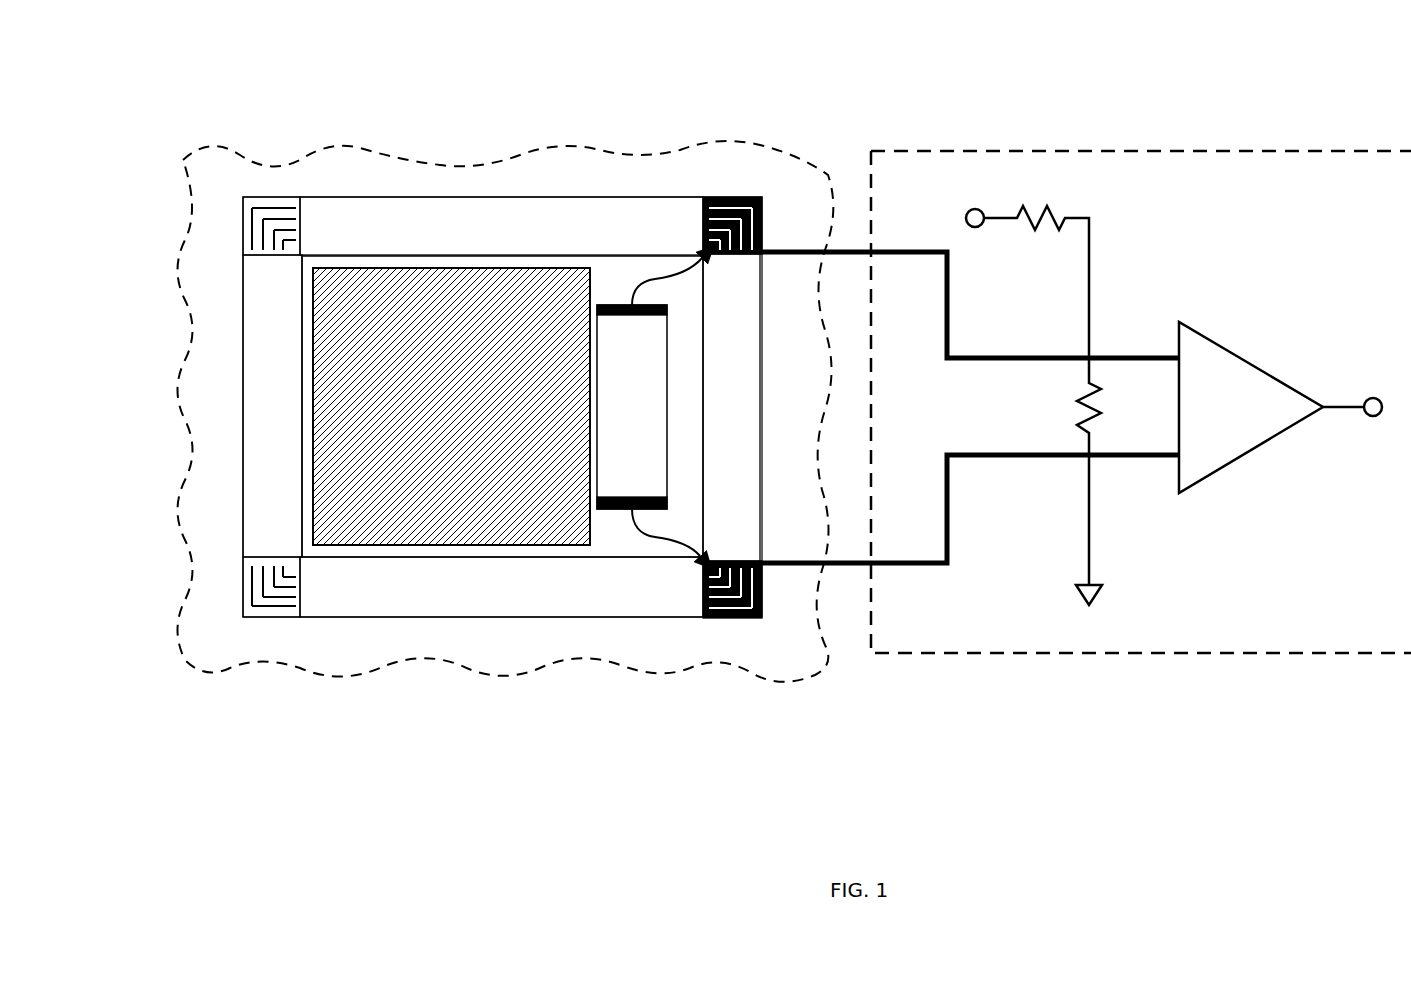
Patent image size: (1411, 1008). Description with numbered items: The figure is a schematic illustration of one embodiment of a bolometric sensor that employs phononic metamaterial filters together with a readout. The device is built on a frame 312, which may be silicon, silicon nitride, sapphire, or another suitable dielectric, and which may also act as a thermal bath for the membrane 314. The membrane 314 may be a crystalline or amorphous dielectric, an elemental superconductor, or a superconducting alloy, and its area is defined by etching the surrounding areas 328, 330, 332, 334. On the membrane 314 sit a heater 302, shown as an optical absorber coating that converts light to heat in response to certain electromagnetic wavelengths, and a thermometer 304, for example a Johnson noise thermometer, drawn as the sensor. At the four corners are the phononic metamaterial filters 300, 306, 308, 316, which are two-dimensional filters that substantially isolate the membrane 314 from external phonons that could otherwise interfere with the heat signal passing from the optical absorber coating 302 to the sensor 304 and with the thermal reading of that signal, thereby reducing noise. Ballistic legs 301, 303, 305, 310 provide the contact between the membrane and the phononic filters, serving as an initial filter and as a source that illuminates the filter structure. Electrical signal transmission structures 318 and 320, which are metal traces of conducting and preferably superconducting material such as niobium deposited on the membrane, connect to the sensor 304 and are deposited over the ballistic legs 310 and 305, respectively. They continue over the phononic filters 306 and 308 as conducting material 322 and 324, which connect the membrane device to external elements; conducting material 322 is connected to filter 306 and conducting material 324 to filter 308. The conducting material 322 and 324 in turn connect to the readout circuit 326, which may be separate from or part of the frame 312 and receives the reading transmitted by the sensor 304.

The phononic metamaterial filter 300 is at (274, 188).
The ballistic leg 301 is at (295, 248).
The heater 302 is at (372, 318).
The ballistic leg 303 is at (297, 566).
The thermometer 304 is at (620, 480).
The ballistic leg 305 is at (707, 560).
The phononic metamaterial filter 306 is at (729, 188).
The phononic metamaterial filter 308 is at (730, 628).
The ballistic leg 310 is at (705, 245).
The frame 312 is at (478, 166).
The membrane 314 is at (500, 569).
The phononic metamaterial filter 316 is at (274, 626).
The electrical signal transmission structure 318 is at (647, 278).
The electrical signal transmission structure 320 is at (662, 538).
The conducting material 322 is at (849, 222).
The conducting material 324 is at (848, 574).
The readout circuit 326 is at (1149, 174).
The etched area 328 is at (356, 230).
The etched area 330 is at (273, 432).
The etched area 332 is at (359, 583).
The etched area 334 is at (727, 385).